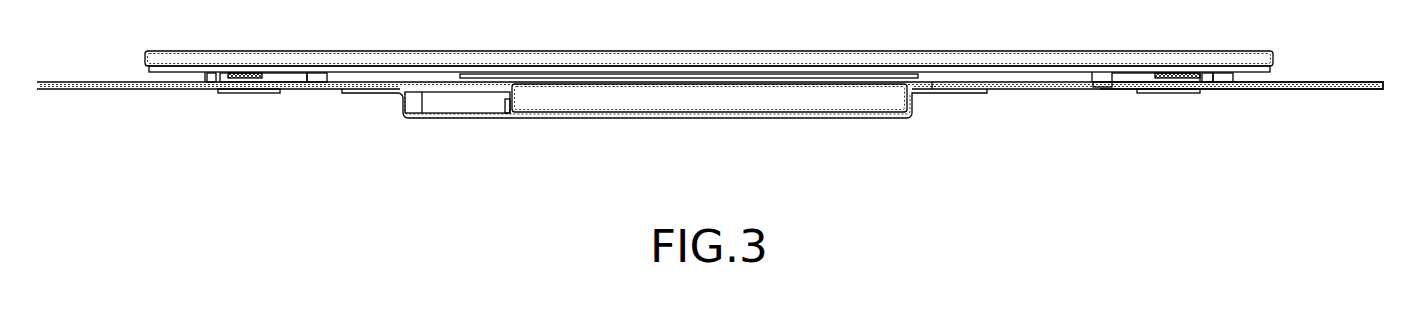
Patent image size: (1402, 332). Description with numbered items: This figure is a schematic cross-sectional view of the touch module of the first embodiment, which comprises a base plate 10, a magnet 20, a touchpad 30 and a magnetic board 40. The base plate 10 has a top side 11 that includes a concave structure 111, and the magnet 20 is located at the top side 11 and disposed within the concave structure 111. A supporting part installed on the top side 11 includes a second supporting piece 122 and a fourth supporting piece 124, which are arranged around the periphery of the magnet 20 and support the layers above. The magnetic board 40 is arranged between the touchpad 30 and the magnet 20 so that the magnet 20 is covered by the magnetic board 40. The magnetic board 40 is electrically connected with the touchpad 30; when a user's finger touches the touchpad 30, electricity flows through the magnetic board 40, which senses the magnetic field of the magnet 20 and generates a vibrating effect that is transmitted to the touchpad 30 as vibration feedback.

The base plate 10 is at (1273, 90).
The top side 11 is at (1295, 82).
The magnet 20 is at (728, 98).
The touchpad 30 is at (907, 58).
The magnetic board 40 is at (488, 73).
The concave structure 111 is at (470, 102).
The second supporting piece 122 is at (1135, 78).
The fourth supporting piece 124 is at (283, 77).